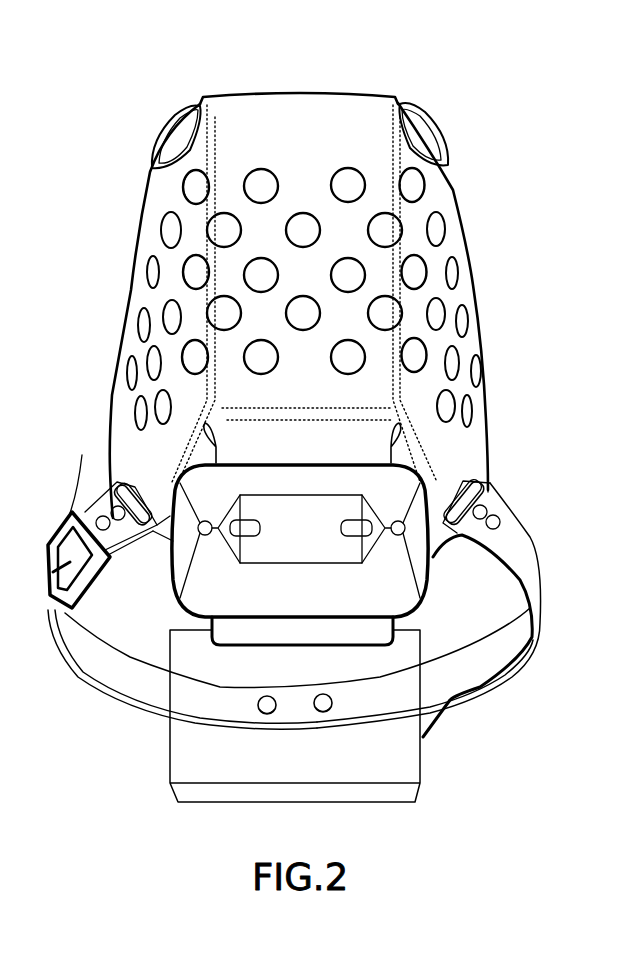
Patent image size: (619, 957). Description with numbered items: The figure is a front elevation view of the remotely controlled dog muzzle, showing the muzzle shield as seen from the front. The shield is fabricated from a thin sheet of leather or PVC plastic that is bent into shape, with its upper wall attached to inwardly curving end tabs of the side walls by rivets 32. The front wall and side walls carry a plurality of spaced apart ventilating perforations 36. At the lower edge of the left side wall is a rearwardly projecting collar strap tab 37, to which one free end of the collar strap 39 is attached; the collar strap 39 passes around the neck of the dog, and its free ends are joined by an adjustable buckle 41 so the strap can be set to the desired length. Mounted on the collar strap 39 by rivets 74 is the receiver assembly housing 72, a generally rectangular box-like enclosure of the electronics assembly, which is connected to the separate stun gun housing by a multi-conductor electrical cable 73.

The rivets 32 is at (112, 393).
The ventilating perforations 36 is at (440, 213).
The left collar strap tab 37 is at (477, 460).
The collar strap 39 is at (513, 510).
The adjustable buckle 41 is at (82, 455).
The receiver assembly housing 72 is at (423, 760).
The multi-conductor electrical cable 73 is at (433, 725).
The rivets 74 is at (318, 710).